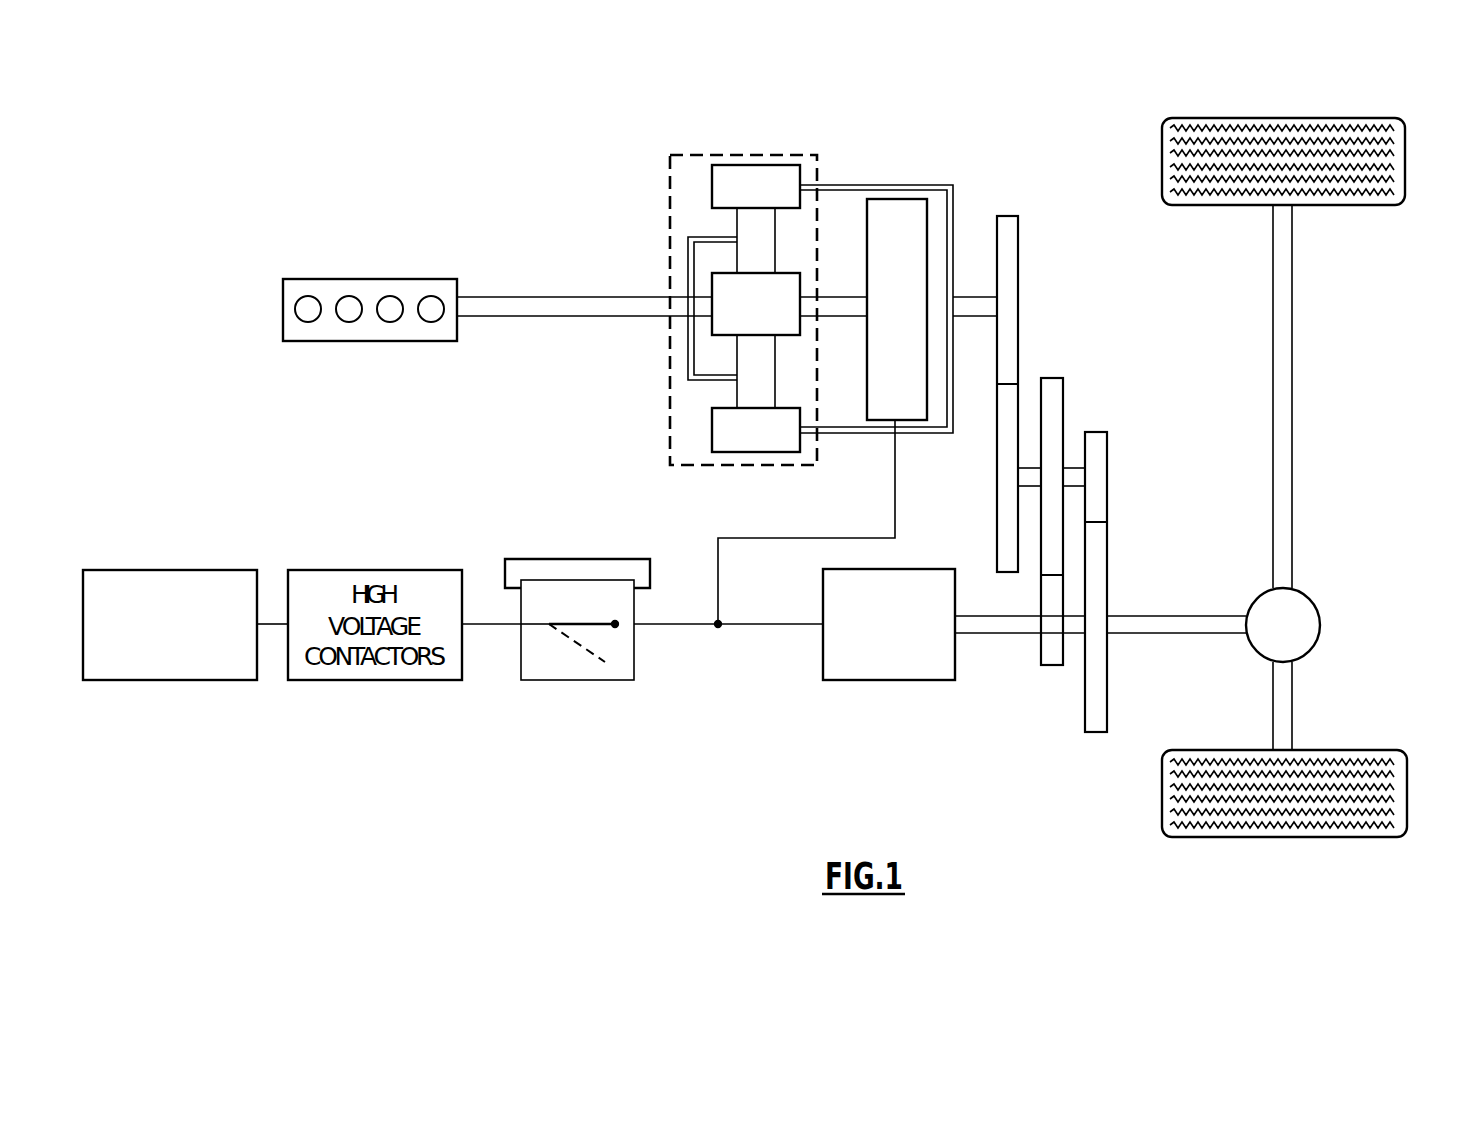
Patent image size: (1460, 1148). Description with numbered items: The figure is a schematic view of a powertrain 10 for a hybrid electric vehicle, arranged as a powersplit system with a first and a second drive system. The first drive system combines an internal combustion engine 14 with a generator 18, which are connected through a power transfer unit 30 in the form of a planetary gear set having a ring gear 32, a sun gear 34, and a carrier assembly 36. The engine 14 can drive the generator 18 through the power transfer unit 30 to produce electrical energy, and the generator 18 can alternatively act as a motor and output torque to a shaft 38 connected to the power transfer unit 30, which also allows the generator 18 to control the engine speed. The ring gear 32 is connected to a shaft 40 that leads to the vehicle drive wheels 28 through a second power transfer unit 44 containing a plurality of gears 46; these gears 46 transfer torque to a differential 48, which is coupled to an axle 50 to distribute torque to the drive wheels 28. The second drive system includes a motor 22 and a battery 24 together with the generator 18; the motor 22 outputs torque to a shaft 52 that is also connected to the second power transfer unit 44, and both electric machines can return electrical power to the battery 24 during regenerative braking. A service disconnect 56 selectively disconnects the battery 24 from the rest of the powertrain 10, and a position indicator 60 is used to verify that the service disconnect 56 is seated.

The powertrain 10 is at (506, 176).
The engine 14 is at (300, 279).
The generator 18 is at (876, 199).
The motor 22 is at (957, 665).
The battery 24 is at (162, 570).
The vehicle drive wheels 28 is at (1407, 790).
The power transfer unit 30 is at (668, 444).
The ring gear 32 is at (712, 183).
The sun gear 34 is at (712, 280).
The carrier assembly 36 is at (688, 365).
The shaft 38 is at (836, 297).
The shaft 40 is at (975, 297).
The second power transfer unit 44 is at (1110, 496).
The gears 46 is at (1063, 400).
The differential 48 is at (1315, 648).
The axle 50 is at (1292, 380).
The shaft 52 is at (1010, 633).
The service disconnect 56 is at (634, 659).
The position indicator 60 is at (620, 559).